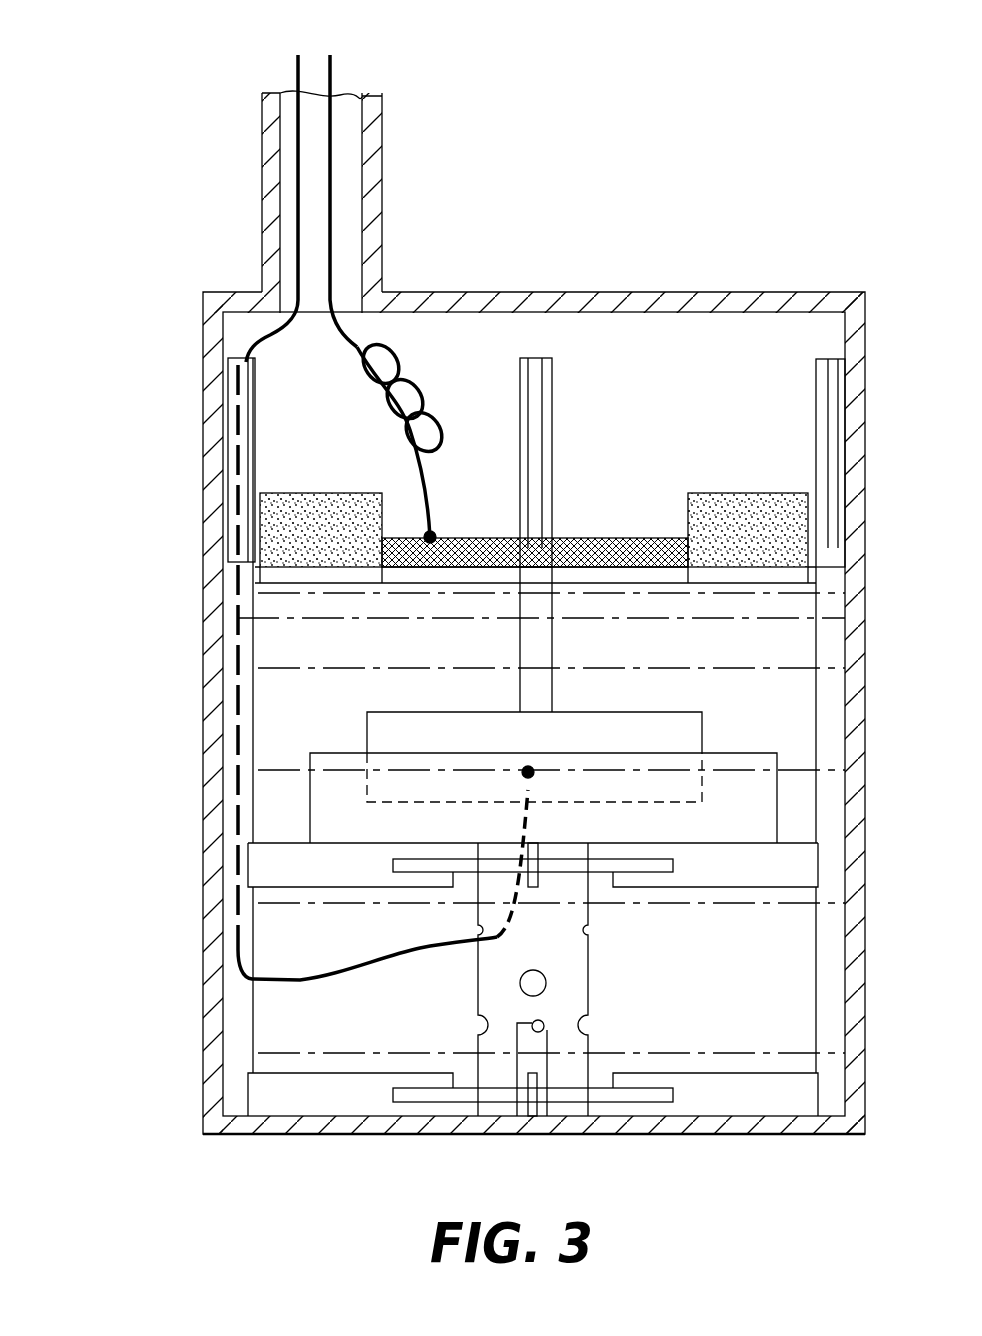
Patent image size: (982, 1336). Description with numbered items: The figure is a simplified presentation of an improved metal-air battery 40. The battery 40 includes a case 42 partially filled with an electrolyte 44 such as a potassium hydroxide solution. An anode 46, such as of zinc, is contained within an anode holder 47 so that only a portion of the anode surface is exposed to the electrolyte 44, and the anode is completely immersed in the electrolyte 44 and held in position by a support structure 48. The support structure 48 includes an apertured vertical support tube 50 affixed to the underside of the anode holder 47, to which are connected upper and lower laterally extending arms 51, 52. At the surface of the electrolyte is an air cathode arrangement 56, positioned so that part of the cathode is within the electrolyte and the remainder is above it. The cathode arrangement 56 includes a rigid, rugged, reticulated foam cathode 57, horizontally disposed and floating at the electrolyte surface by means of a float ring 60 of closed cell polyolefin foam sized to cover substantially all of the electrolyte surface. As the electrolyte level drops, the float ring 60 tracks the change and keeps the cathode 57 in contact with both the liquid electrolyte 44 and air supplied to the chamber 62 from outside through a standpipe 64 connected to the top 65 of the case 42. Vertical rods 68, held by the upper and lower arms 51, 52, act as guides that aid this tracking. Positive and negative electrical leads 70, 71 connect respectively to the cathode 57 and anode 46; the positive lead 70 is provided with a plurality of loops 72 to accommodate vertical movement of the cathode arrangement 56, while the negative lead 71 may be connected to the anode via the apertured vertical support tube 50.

The metal-air battery 40 is at (86, 658).
The case 42 is at (207, 797).
The electrolyte 44 is at (268, 643).
The anode 46 is at (598, 728).
The anode holder 47 is at (727, 757).
The support structure 48 is at (605, 989).
The apertured vertical support tube 50 is at (478, 990).
The upper laterally extending arm 51 is at (700, 872).
The lower laterally extending arm 52 is at (700, 1085).
The air cathode arrangement 56 is at (628, 492).
The air cathode 57 is at (478, 537).
The float ring 60 is at (752, 507).
The chamber 62 is at (720, 360).
The standpipe 64 is at (262, 210).
The top of case 65 is at (578, 293).
The vertical rods 68 is at (258, 412).
The positive electrical lead 70 is at (330, 72).
The negative electrical lead 71 is at (305, 30).
The loops 72 is at (433, 407).